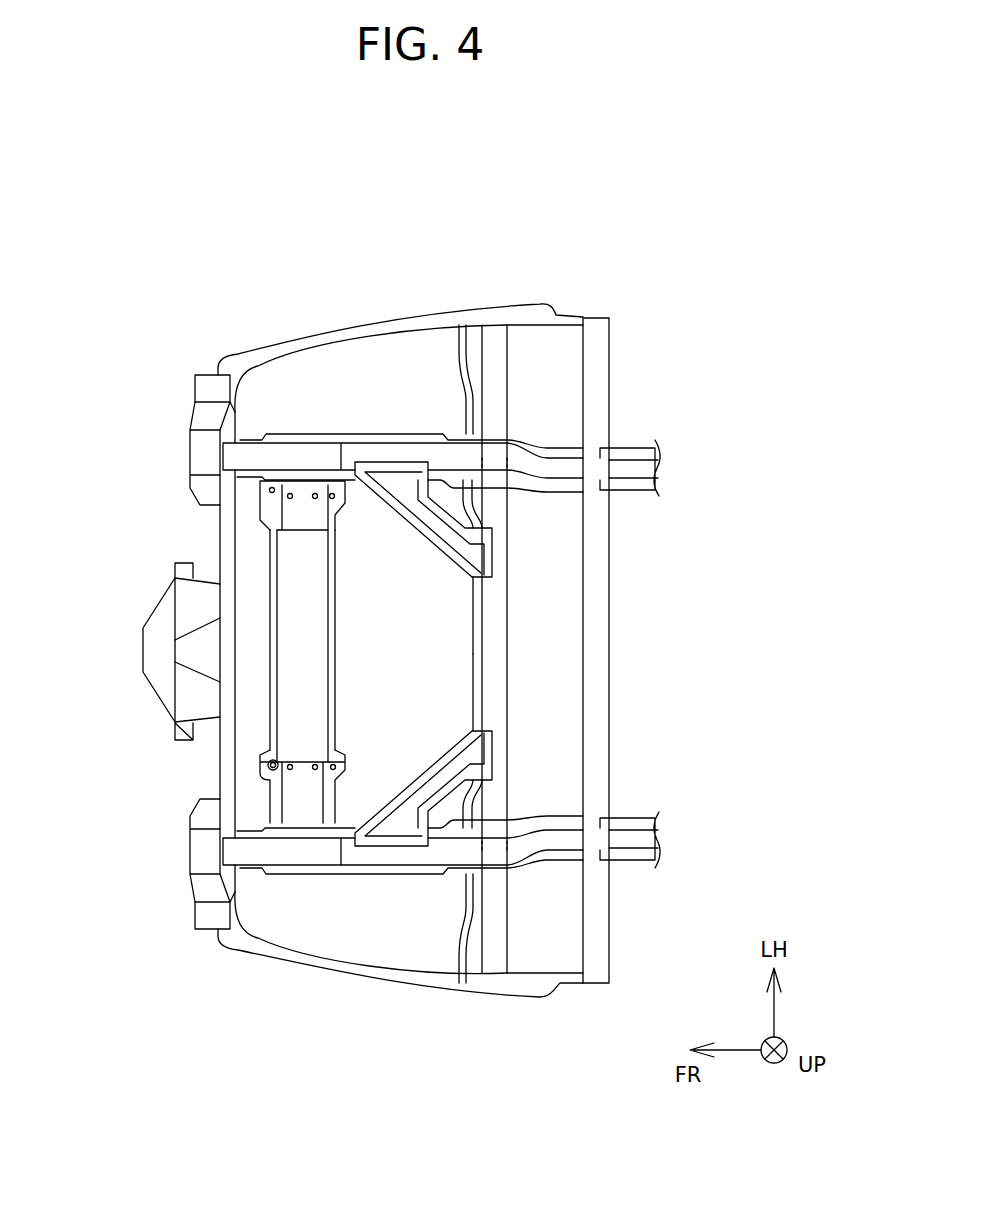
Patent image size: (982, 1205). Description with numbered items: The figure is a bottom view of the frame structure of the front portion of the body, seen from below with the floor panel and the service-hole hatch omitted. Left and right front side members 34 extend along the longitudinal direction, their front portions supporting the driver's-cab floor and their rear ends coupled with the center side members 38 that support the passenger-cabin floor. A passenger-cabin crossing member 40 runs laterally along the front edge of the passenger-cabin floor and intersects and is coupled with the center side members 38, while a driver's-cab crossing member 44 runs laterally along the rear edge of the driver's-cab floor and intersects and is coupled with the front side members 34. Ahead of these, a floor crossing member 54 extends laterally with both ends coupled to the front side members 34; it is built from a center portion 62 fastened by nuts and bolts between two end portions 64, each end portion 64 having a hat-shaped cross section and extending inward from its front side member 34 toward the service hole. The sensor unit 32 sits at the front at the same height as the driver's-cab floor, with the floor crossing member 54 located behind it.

The sensor unit 32 is at (158, 681).
The front side members 34 is at (373, 452).
The center side member 38 is at (627, 467).
The passenger-cabin crossing member 40 is at (596, 640).
The driver's-cab crossing member 44 is at (496, 632).
The floor crossing member 54 is at (373, 677).
The center portion 62 is at (305, 604).
The end portion 64 is at (313, 510).